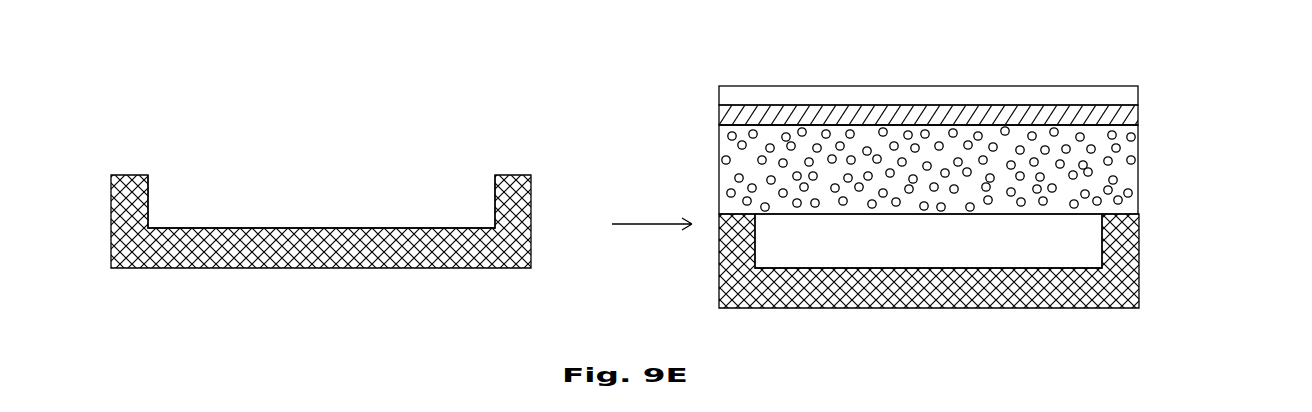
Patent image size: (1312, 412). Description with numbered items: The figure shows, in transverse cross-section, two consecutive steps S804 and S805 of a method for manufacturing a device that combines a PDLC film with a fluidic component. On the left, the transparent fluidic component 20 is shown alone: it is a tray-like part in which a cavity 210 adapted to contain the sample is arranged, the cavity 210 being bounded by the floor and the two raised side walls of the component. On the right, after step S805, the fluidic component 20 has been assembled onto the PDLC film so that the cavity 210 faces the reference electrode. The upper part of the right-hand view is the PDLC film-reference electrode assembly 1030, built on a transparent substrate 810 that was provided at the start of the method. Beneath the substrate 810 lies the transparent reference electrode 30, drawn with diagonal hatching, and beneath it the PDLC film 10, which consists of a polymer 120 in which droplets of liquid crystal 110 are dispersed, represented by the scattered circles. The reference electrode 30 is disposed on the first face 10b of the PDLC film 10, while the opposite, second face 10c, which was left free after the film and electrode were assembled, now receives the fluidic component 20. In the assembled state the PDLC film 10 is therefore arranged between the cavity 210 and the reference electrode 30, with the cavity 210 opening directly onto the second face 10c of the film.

The transparent fluidic component 20 is at (532, 258).
The cavity 210 is at (470, 207).
The PDLC film 10 is at (981, 143).
The droplets of liquid crystal 110 is at (1118, 159).
The polymer 120 is at (1113, 187).
The transparent reference electrode 30 is at (1120, 120).
The transparent substrate 810 is at (1112, 94).
The PDLC film-reference electrode assembly 1030 is at (1015, 143).
The first face of the PDLC film 10b is at (860, 110).
The second face of the PDLC film 10c is at (1000, 221).
The step S804 is at (95, 153).
The step S805 is at (689, 110).